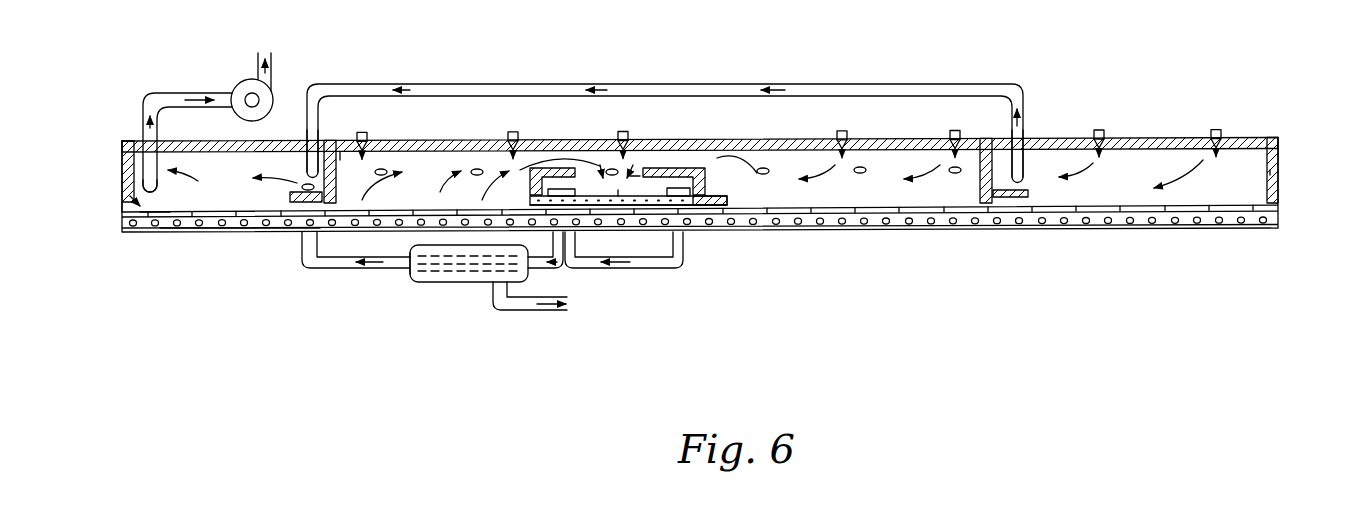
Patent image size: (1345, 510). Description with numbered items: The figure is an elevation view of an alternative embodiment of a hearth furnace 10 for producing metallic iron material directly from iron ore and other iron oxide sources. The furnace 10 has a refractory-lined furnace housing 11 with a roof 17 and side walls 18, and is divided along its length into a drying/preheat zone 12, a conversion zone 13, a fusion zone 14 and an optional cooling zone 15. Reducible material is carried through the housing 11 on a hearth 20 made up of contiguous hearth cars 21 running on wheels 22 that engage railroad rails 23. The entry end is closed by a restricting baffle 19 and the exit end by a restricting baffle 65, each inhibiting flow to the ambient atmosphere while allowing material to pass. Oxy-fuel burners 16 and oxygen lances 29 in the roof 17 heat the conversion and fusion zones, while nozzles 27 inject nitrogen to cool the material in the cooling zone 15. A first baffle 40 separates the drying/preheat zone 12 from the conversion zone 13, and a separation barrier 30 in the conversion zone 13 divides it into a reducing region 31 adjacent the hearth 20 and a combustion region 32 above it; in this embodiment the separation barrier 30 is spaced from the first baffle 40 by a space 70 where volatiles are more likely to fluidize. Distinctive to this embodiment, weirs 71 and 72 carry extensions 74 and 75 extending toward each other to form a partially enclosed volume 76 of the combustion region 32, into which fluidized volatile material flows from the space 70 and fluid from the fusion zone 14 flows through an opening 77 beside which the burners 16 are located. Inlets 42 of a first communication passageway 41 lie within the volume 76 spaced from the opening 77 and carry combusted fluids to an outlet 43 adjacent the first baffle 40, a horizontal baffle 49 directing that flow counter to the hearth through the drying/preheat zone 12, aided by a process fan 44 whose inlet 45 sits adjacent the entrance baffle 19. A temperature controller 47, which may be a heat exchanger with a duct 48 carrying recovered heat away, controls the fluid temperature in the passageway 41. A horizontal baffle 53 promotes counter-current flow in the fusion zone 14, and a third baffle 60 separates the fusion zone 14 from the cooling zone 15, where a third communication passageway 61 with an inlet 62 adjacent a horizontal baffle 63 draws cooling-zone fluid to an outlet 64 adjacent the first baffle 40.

The hearth furnace 10 is at (133, 138).
The furnace housing 11 is at (173, 140).
The drying/preheat zone 12 is at (182, 202).
The conversion zone 13 is at (402, 200).
The fusion zone 14 is at (886, 188).
The cooling zone 15 is at (1136, 195).
The oxy-fuel burners 16 is at (477, 168).
The roof 17 is at (790, 137).
The side wall 18 is at (811, 203).
The restricting baffle 19 is at (122, 150).
The hearth 20 is at (130, 200).
The hearth cars 21 is at (155, 216).
The wheels 22 is at (226, 233).
The railroad rails 23 is at (237, 233).
The nozzles 27 is at (1100, 128).
The oxygen lances 29 is at (363, 132).
The separation barrier 30 is at (642, 203).
The reducing region 31 is at (690, 208).
The combustion region 32 is at (619, 180).
The first baffle 40 is at (343, 150).
The first communication passageway 41 is at (337, 268).
The inlet 42 is at (583, 200).
The outlet 43 is at (306, 184).
The process fan 44 is at (264, 93).
The inlet 45 is at (148, 184).
The temperature controller 47 is at (460, 270).
The duct 48 is at (524, 310).
The horizontal baffle 49 is at (305, 205).
The horizontal baffle 53 is at (714, 207).
The third baffle 60 is at (978, 182).
The third communication passageway 61 is at (702, 85).
The inlet 62 is at (1010, 180).
The horizontal baffle 63 is at (1012, 197).
The outlet 64 is at (310, 168).
The restricting baffle 65 is at (1280, 145).
The space 70 is at (426, 200).
The weir 71 is at (522, 168).
The weir 72 is at (724, 168).
The extension 74 is at (557, 168).
The extension 75 is at (665, 168).
The partially enclosed volume 76 is at (619, 192).
The opening 77 is at (636, 173).